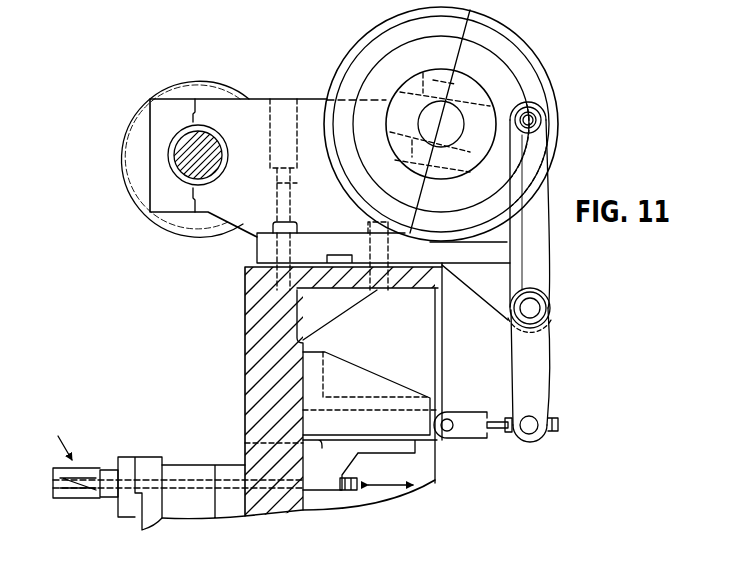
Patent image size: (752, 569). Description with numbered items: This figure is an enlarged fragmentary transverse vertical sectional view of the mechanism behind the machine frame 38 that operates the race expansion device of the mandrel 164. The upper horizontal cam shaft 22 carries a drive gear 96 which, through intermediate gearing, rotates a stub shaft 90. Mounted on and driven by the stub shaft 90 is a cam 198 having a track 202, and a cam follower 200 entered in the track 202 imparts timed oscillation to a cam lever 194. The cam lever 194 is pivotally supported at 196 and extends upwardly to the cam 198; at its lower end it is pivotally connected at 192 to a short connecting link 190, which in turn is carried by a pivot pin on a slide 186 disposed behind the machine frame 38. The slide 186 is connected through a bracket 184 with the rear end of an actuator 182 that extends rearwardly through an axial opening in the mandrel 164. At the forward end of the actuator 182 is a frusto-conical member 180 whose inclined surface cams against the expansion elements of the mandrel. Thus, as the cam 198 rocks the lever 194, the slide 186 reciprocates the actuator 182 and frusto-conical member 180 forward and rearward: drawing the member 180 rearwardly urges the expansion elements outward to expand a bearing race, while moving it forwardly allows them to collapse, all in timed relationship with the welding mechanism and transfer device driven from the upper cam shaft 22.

The upper horizontal cam shaft 22 is at (219, 134).
The machine frame 38 is at (245, 282).
The stub shaft 90 is at (438, 110).
The drive gear 96 is at (197, 77).
The mandrel 164 is at (53, 434).
The frusto-conical member 180 is at (53, 484).
The actuator 182 is at (96, 470).
The bracket 184 is at (405, 457).
The slide 186 is at (438, 417).
The connecting link 190 is at (475, 437).
The pivotal connection 192 is at (533, 434).
The cam lever 194 is at (540, 364).
The pivot support 196 is at (534, 308).
The cam 198 is at (555, 105).
The cam follower 200 is at (538, 127).
The track 202 is at (522, 82).